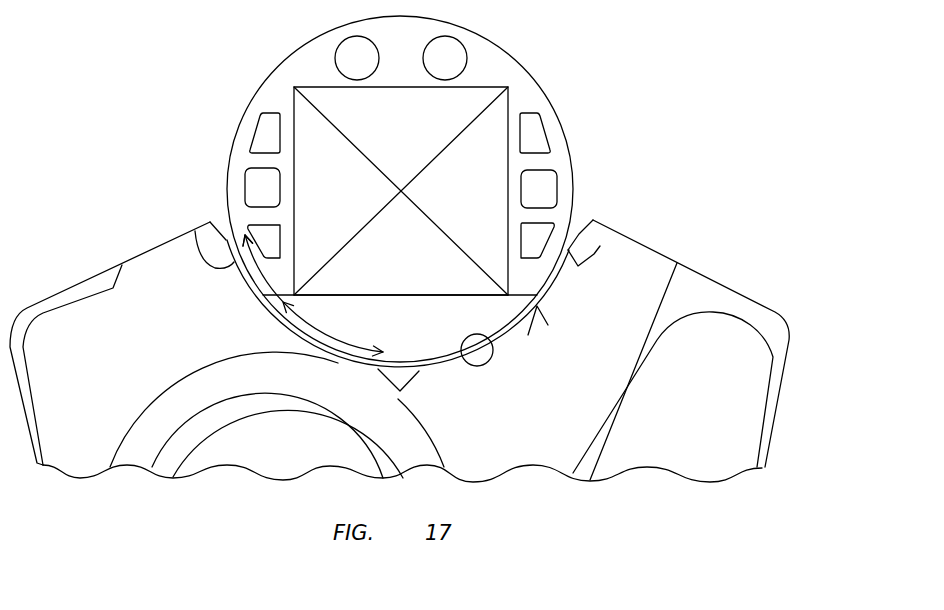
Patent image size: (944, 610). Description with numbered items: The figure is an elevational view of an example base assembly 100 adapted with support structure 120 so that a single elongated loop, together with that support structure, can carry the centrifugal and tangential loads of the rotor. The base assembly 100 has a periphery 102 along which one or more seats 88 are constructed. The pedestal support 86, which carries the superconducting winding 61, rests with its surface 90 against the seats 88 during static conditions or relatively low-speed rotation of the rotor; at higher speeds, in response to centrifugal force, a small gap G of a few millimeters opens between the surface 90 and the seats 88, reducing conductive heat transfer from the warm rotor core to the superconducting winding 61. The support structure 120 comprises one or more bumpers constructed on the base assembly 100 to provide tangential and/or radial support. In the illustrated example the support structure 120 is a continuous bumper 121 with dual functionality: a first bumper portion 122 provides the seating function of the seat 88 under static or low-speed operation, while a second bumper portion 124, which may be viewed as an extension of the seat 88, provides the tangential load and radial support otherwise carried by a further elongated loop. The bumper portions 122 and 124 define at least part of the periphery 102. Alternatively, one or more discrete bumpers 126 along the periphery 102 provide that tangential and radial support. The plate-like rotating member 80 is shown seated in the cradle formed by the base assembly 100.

The rotatable plate 80 is at (518, 62).
The superconducting winding 61 is at (413, 157).
The pedestal support 86 is at (418, 322).
The seat 88 is at (457, 353).
The surface 90 is at (400, 363).
The base assembly 100 is at (715, 270).
The periphery 102 is at (593, 219).
The support structure 120 is at (222, 230).
The continuous bumper 121 is at (210, 223).
The first bumper portion 122 is at (318, 328).
The second bumper portion 124 is at (253, 262).
The discrete bumper 126 is at (580, 248).
The gap G is at (265, 302).